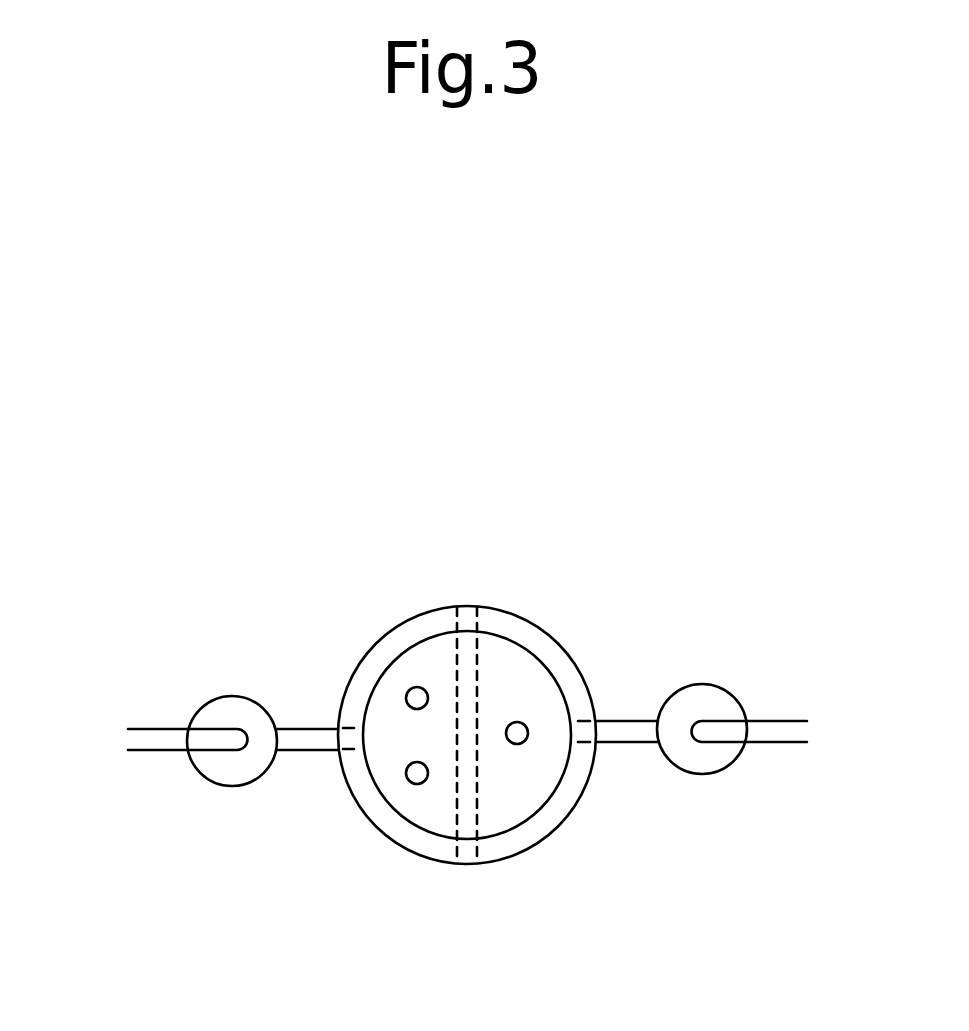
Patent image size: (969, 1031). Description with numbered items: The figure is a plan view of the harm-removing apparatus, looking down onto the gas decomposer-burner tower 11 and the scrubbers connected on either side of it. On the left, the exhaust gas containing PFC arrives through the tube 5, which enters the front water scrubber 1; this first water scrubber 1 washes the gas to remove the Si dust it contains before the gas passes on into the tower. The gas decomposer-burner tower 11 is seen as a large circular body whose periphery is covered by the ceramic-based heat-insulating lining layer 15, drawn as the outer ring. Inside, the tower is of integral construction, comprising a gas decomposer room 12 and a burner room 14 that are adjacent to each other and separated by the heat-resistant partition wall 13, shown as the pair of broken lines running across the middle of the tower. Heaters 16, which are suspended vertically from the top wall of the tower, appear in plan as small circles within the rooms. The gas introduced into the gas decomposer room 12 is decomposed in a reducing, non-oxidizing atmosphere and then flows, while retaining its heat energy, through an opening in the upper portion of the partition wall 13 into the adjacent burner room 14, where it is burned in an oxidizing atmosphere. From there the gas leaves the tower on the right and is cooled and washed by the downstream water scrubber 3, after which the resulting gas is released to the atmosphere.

The front water scrubber 1 is at (238, 713).
The water scrubber 3 is at (710, 703).
The tube 5 is at (160, 742).
The gas decomposer-burner tower 11 is at (631, 527).
The gas decomposer room 12 is at (435, 668).
The partition wall 13 is at (467, 672).
The burner room 14 is at (533, 688).
The heat-insulating lining layer 15 is at (580, 772).
The heaters 16 is at (417, 773).